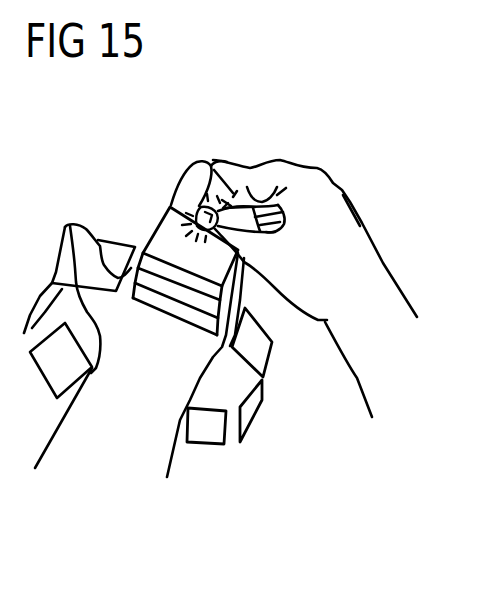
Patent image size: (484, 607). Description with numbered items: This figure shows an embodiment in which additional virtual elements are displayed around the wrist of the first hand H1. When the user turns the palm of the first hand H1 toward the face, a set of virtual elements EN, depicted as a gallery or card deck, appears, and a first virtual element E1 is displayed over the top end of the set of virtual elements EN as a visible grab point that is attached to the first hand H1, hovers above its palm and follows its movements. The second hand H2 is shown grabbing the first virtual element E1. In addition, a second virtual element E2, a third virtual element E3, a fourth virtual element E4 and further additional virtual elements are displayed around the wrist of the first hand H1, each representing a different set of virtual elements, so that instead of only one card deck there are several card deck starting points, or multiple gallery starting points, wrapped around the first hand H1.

The first hand H1 is at (74, 225).
The second hand H2 is at (311, 166).
The first virtual element E1 is at (192, 206).
The second virtual element E2 is at (258, 352).
The third virtual element E3 is at (250, 408).
The fourth virtual element E4 is at (209, 433).
The set of virtual elements EN is at (165, 303).